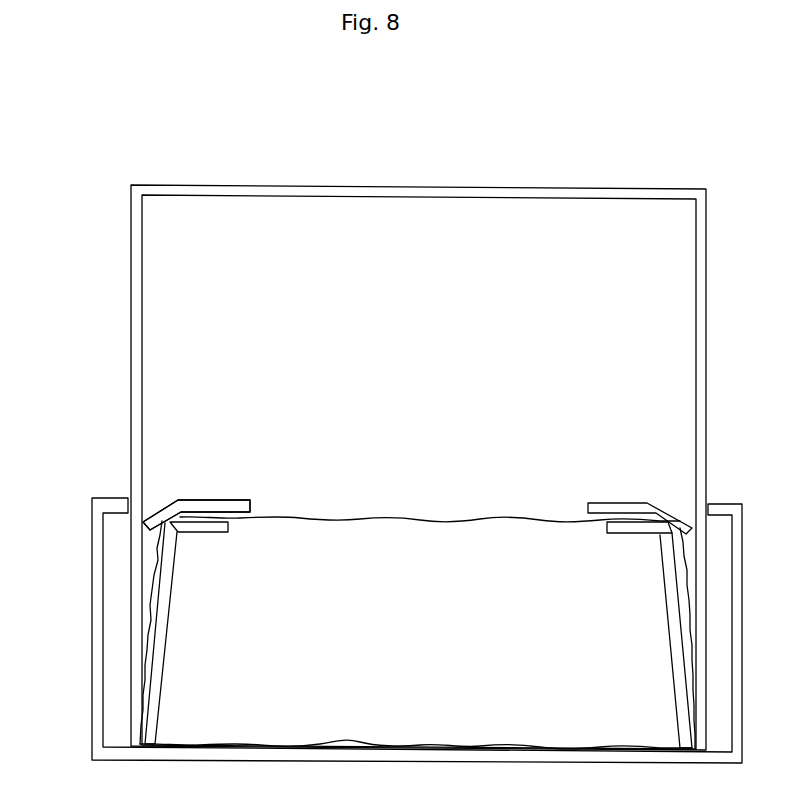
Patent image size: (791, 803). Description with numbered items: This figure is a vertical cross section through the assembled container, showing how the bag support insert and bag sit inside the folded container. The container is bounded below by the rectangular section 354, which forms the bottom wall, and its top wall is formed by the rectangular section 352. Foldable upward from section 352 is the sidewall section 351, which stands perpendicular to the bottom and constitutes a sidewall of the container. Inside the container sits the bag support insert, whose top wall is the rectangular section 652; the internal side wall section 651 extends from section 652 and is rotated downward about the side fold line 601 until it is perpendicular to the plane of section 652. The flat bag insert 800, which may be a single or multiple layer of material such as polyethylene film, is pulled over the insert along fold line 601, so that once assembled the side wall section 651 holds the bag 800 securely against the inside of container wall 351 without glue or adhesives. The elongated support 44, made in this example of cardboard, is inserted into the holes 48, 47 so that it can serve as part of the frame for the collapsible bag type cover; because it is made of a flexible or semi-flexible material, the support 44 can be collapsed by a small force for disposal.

The elongated support 44 is at (140, 295).
The hole 47 is at (153, 512).
The hole 48 is at (677, 507).
The sidewall section 351 is at (100, 670).
The rectangular section 352 is at (237, 505).
The rectangular section 354 is at (343, 753).
The side fold line 601 is at (178, 535).
The internal side wall section 651 is at (155, 680).
The rectangular section 652 is at (197, 527).
The bag insert 800 is at (420, 520).